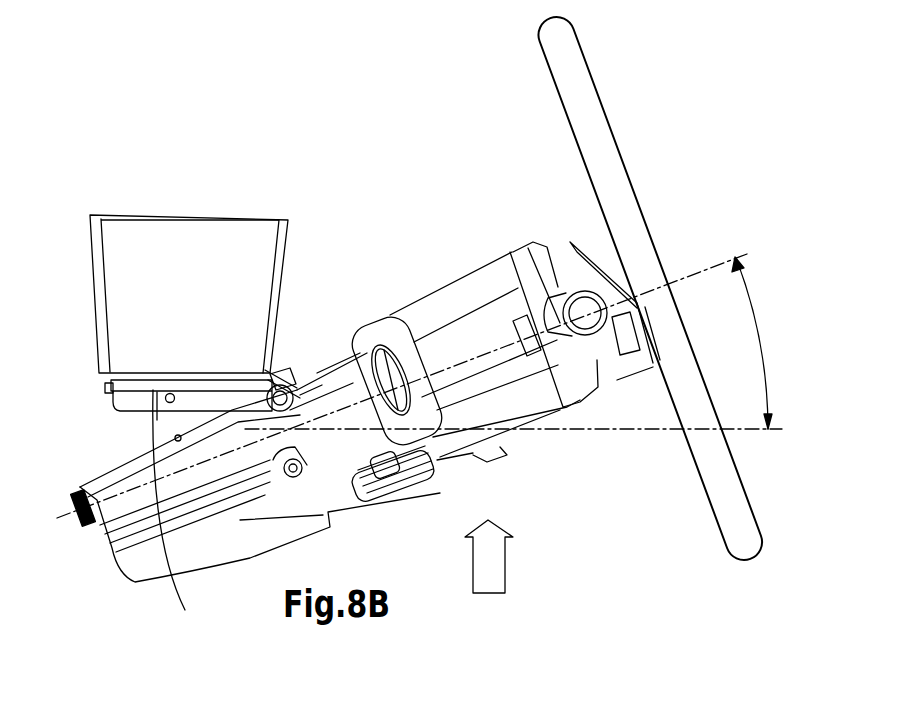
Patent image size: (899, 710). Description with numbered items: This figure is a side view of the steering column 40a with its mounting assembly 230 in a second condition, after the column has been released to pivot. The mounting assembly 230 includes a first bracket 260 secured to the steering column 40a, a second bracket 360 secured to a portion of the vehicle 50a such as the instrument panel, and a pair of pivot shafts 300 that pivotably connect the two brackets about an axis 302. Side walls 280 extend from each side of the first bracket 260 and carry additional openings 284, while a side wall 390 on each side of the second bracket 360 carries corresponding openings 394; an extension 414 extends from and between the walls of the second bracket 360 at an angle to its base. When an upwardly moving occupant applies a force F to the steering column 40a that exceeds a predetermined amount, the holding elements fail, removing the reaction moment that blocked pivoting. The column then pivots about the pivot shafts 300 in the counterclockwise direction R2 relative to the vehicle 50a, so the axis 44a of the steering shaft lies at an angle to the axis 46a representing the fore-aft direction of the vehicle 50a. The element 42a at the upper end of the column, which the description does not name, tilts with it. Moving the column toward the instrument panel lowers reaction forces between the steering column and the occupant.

The blade 42a is at (597, 132).
The axis of the steering shaft 44a is at (700, 267).
The axis representing the fore-aft direction of the vehicle 46a is at (740, 430).
The vehicle 50a is at (233, 243).
The steering column 40a is at (438, 275).
The mounting assembly 230 is at (293, 336).
The pivot shafts 300 is at (297, 387).
The second bracket 360 is at (211, 382).
The openings 394 is at (167, 385).
The extension 414 is at (271, 375).
The side wall 390 is at (125, 398).
The openings 284 is at (165, 432).
The first bracket 260 is at (140, 452).
The side walls 280 is at (98, 523).
The axis 302 is at (290, 415).
The counterclockwise direction R2 is at (183, 505).
The force F is at (489, 556).